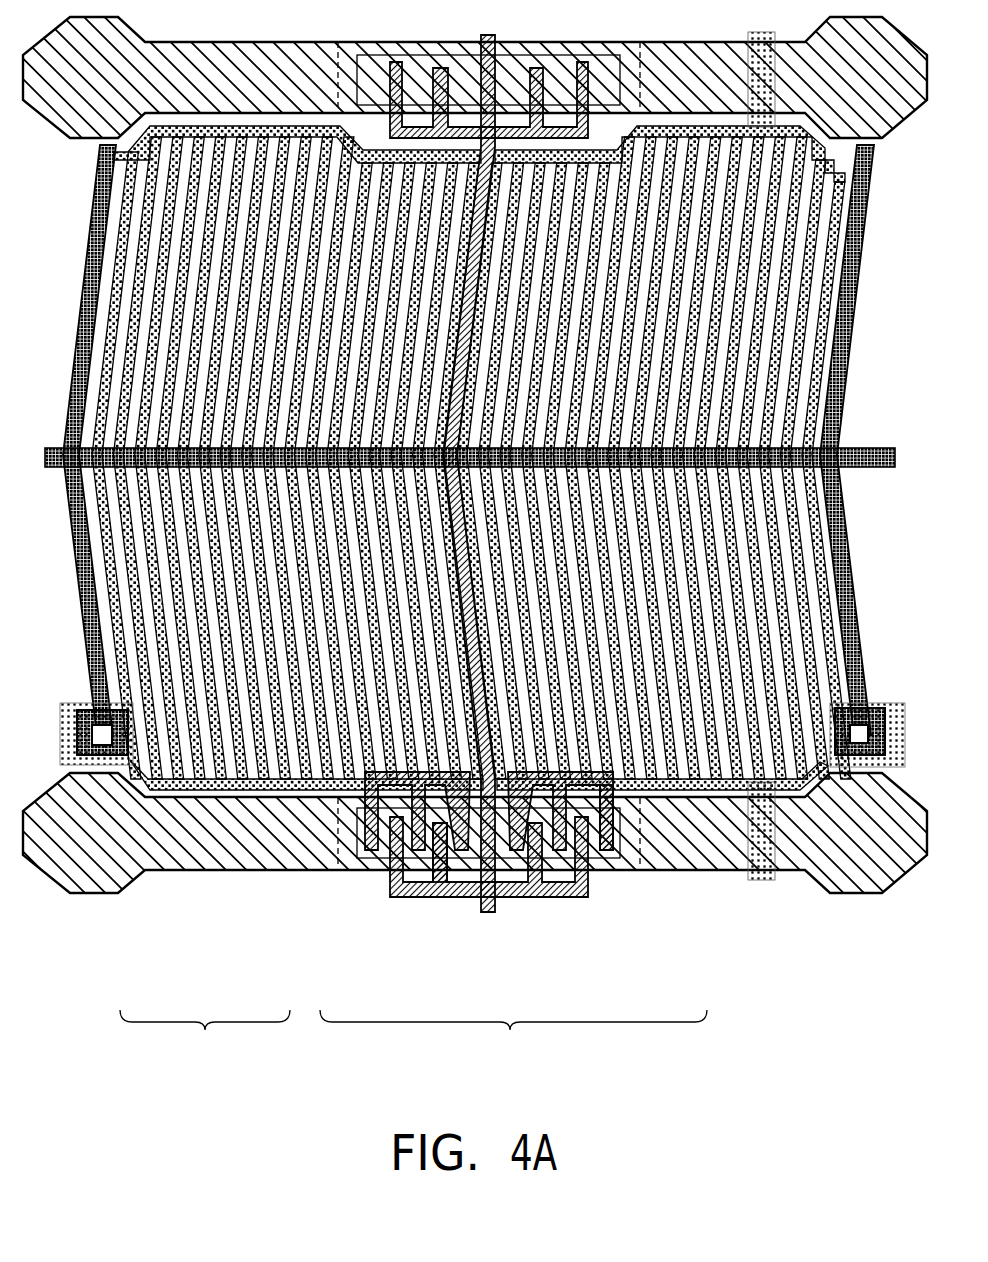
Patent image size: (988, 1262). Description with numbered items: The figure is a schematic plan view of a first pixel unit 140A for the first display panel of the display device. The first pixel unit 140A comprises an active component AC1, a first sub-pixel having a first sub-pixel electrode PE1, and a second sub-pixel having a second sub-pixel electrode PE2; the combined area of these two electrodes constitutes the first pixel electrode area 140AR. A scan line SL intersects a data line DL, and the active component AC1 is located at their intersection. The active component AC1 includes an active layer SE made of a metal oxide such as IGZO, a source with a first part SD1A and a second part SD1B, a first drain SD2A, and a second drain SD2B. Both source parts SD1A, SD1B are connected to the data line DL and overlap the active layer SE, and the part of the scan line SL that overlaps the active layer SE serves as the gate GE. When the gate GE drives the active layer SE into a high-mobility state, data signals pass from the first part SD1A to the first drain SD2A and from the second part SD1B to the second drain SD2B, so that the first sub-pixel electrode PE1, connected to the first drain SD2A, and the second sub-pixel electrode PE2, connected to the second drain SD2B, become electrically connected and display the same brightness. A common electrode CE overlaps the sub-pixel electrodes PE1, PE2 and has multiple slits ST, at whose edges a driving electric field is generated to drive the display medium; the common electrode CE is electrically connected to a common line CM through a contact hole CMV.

The first sub-pixel electrode PE1 is at (452, 668).
The second sub-pixel electrode PE2 is at (485, 593).
The first pixel electrode area 140AR is at (205, 1038).
The common electrode CE is at (795, 513).
The common line CM is at (55, 447).
The slit ST is at (813, 305).
The contact hole CMV is at (90, 722).
The scan line SL is at (702, 857).
The gate GE is at (625, 855).
The active layer SE is at (513, 895).
The first part of the source SD1A is at (382, 880).
The second part of the source SD1B is at (563, 883).
The first drain SD2A is at (462, 873).
The second drain SD2B is at (613, 833).
The active component AC1 is at (513, 1038).
The data line DL is at (466, 388).
The first pixel unit 140A is at (902, 970).